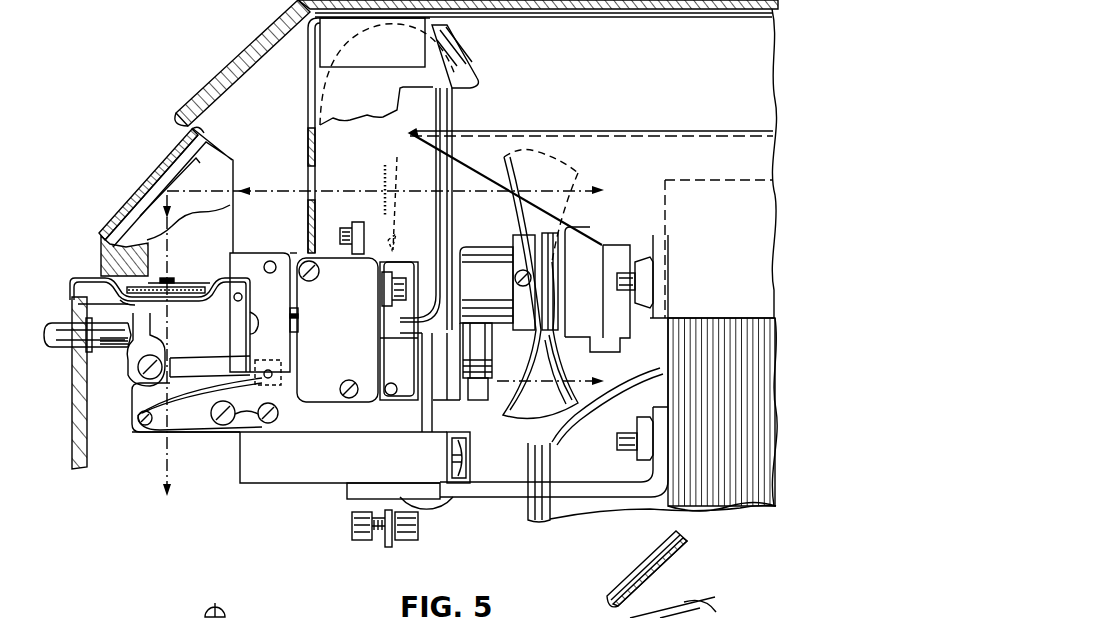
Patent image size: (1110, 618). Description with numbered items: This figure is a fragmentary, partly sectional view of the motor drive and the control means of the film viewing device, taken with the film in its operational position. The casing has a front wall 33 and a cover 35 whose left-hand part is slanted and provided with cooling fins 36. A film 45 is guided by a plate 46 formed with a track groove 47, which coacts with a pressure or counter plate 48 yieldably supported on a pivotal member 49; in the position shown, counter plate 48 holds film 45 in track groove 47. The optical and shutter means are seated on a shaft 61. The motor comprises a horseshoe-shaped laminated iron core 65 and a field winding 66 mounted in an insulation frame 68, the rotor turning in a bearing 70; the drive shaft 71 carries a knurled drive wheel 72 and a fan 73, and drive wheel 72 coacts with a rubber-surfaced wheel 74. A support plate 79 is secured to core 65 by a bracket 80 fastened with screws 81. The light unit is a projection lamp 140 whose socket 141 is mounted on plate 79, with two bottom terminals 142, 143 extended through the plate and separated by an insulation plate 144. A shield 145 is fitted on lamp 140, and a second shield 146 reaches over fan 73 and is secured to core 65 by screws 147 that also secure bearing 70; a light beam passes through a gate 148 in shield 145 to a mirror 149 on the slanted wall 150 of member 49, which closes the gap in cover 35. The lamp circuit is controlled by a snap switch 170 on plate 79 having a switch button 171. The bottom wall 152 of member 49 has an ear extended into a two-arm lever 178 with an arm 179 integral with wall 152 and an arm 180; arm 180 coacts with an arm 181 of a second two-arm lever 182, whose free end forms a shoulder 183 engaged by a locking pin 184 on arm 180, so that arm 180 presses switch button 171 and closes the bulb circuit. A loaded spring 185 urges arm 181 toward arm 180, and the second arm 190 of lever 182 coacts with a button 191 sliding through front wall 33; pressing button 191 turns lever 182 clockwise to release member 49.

The front wall 33 is at (70, 416).
The cover 35 is at (556, 2).
The cooling fins 36 is at (240, 55).
The film 45 is at (175, 294).
The plate 46 is at (80, 279).
The track groove 47 is at (126, 301).
The counter plate 48 is at (181, 284).
The pivotal member 49 is at (126, 198).
The shaft 61 is at (297, 316).
The laminated iron core 65 is at (758, 388).
The field winding 66 is at (526, 512).
The insulation frame 68 is at (582, 512).
The bearing 70 is at (583, 240).
The drive shaft 71 is at (560, 280).
The drive wheel 72 is at (482, 258).
The fan 73 is at (526, 410).
The wheel 74 is at (478, 402).
The support plate 79 is at (292, 484).
The bracket 80 is at (582, 482).
The screws 81 is at (645, 421).
The projection lamp 140 is at (446, 118).
The socket 141 is at (398, 418).
The bottom terminal 142 is at (358, 541).
The bottom terminal 143 is at (416, 538).
The insulation plate 144 is at (383, 541).
The shield 145 is at (310, 145).
The second shield 146 is at (630, 152).
The screws 147 is at (646, 284).
The gate 148 is at (310, 178).
The mirror 149 is at (176, 182).
The slanted wall 150 is at (160, 173).
The bottom wall 152 is at (128, 263).
The snap switch 170 is at (322, 394).
The switch button 171 is at (293, 366).
The two-arm lever 178 is at (285, 250).
The arm 179 is at (238, 254).
The arm 180 is at (256, 342).
The arm 181 is at (188, 368).
The second two-arm lever 182 is at (134, 382).
The shoulder 183 is at (265, 368).
The locking pin 184 is at (270, 380).
The loaded spring 185 is at (201, 436).
The second arm 190 is at (135, 340).
The button 191 is at (62, 345).